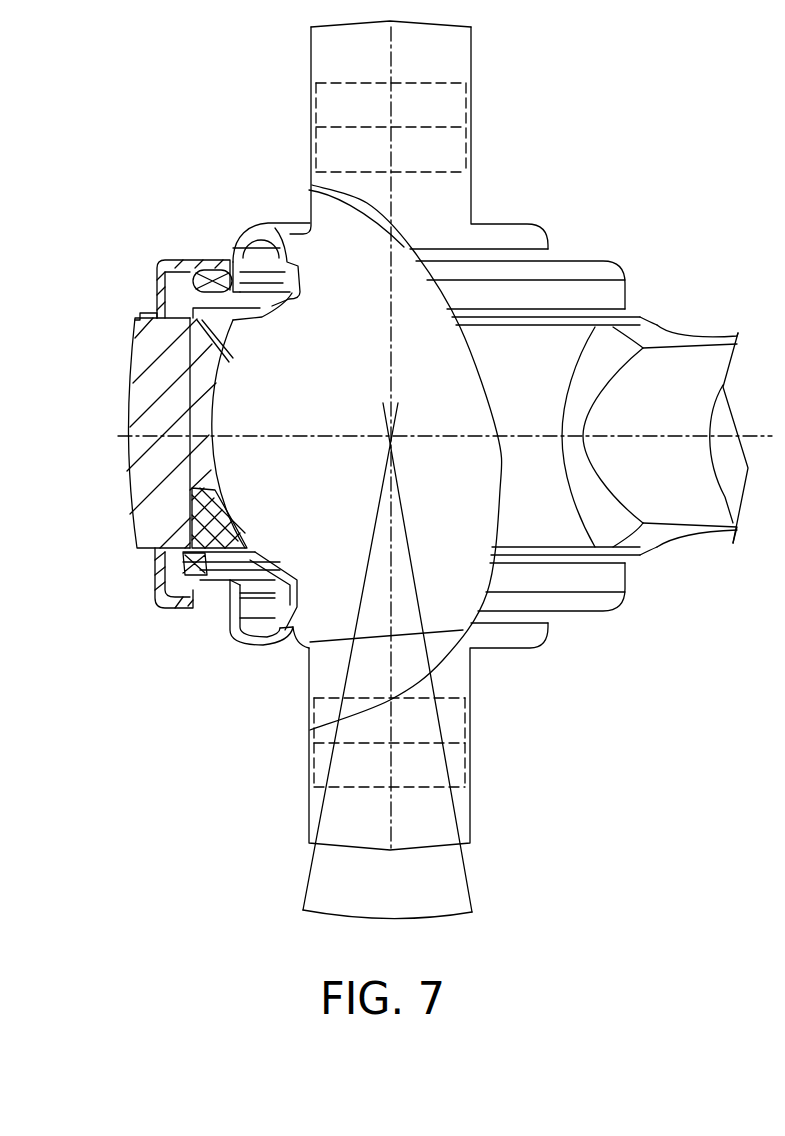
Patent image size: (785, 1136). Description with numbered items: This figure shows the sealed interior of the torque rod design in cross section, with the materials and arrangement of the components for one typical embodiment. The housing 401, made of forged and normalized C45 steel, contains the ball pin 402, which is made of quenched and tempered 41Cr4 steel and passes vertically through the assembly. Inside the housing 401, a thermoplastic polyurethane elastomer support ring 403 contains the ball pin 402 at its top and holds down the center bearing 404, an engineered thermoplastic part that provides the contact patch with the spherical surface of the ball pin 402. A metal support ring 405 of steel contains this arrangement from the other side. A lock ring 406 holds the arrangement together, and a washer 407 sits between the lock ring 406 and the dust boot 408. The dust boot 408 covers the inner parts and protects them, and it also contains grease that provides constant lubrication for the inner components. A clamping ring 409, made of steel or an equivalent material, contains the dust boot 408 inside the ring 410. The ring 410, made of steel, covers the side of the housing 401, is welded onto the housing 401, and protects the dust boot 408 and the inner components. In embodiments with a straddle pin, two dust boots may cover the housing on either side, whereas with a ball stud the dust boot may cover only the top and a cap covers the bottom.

The housing 401 is at (154, 382).
The ball pin 402 is at (236, 448).
The support ring (TPC) 403 is at (203, 328).
The center bearing 404 is at (202, 415).
The support ring (metal) 405 is at (214, 507).
The lock ring 406 is at (188, 567).
The washer 407 is at (203, 582).
The dust boot 408 is at (250, 225).
The clamping ring 409 is at (268, 273).
The ring 410 is at (153, 284).